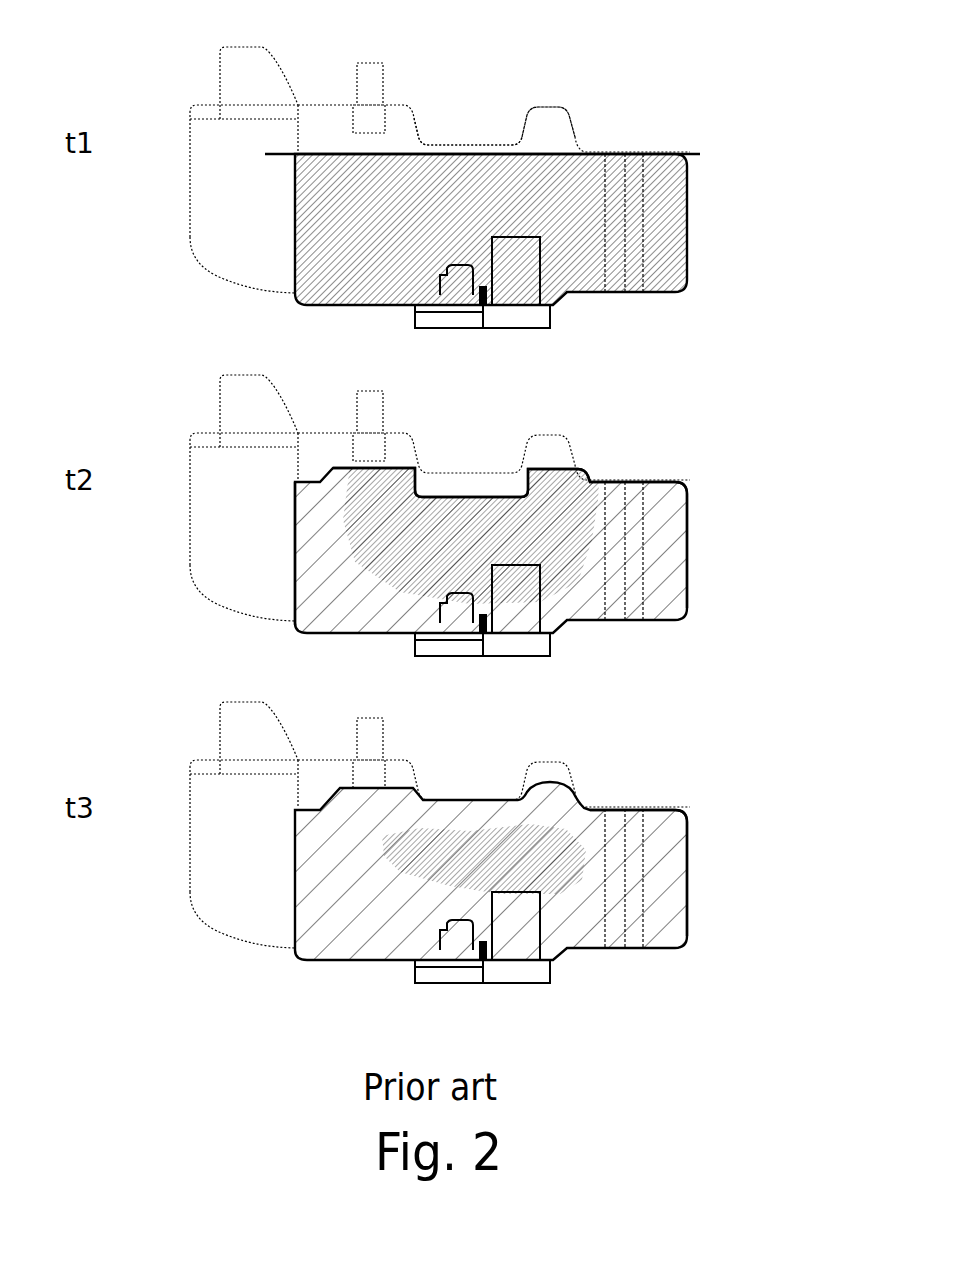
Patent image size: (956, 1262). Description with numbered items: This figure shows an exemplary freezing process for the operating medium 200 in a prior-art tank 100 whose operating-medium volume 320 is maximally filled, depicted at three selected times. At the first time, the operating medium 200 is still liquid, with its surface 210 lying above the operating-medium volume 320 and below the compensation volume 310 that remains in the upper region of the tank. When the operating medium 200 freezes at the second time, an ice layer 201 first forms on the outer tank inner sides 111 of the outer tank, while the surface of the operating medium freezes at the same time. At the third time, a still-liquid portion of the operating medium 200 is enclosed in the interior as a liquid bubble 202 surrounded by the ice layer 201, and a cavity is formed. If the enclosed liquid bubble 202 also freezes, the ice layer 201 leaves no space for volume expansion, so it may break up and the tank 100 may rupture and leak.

The tank 100 is at (136, 62).
The outer tank inner side 111 is at (298, 488).
The operating medium 200 is at (602, 212).
The ice layer 201 is at (458, 482).
The liquid bubble 202 is at (400, 873).
The surface 210 is at (688, 153).
The compensation volume 310 is at (407, 140).
The operating-medium volume 320 is at (566, 150).